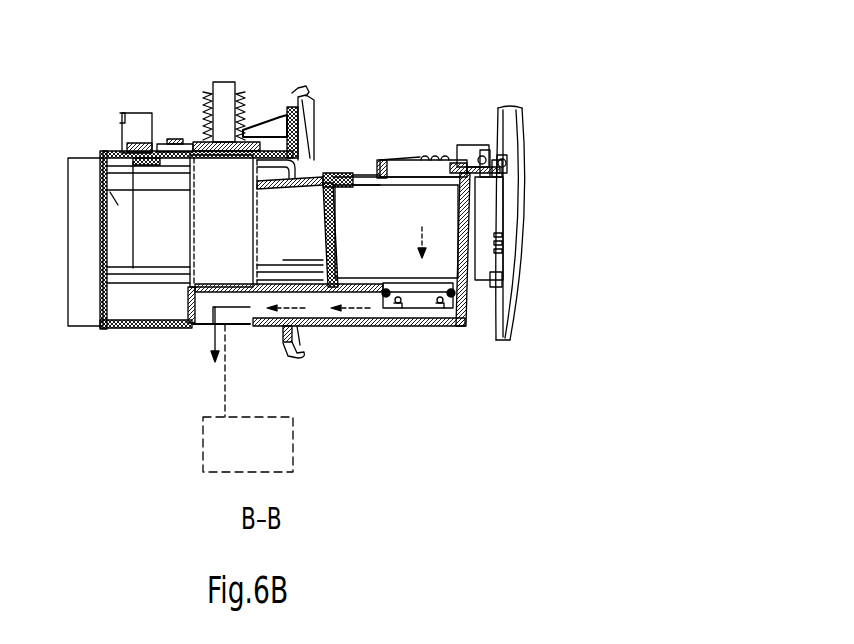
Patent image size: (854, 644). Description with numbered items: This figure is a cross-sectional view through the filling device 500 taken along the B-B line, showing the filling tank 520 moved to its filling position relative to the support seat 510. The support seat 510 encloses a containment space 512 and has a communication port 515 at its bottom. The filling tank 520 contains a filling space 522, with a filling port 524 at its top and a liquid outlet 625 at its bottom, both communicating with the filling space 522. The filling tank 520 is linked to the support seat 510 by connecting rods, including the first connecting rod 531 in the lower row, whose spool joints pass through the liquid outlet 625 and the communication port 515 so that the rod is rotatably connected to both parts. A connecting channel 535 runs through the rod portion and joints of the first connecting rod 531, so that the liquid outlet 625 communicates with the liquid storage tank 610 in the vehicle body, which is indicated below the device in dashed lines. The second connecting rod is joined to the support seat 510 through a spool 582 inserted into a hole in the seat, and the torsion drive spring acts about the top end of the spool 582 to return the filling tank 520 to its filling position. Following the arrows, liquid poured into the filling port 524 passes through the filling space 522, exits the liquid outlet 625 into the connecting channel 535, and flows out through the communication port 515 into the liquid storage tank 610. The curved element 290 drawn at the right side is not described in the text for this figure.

The filling device 500 is at (613, 172).
The spool 582 is at (218, 113).
The containment space 512 is at (103, 157).
The support seat 510 is at (185, 152).
The filling tank 520 is at (343, 177).
The filling space 522 is at (392, 210).
The filling port 524 is at (433, 177).
The connecting channel 535 is at (368, 300).
The liquid outlet 625 is at (427, 290).
The first connecting rod 531 is at (327, 320).
The communication port 515 is at (203, 327).
The liquid storage tank 610 is at (203, 433).
The display 290 is at (513, 317).